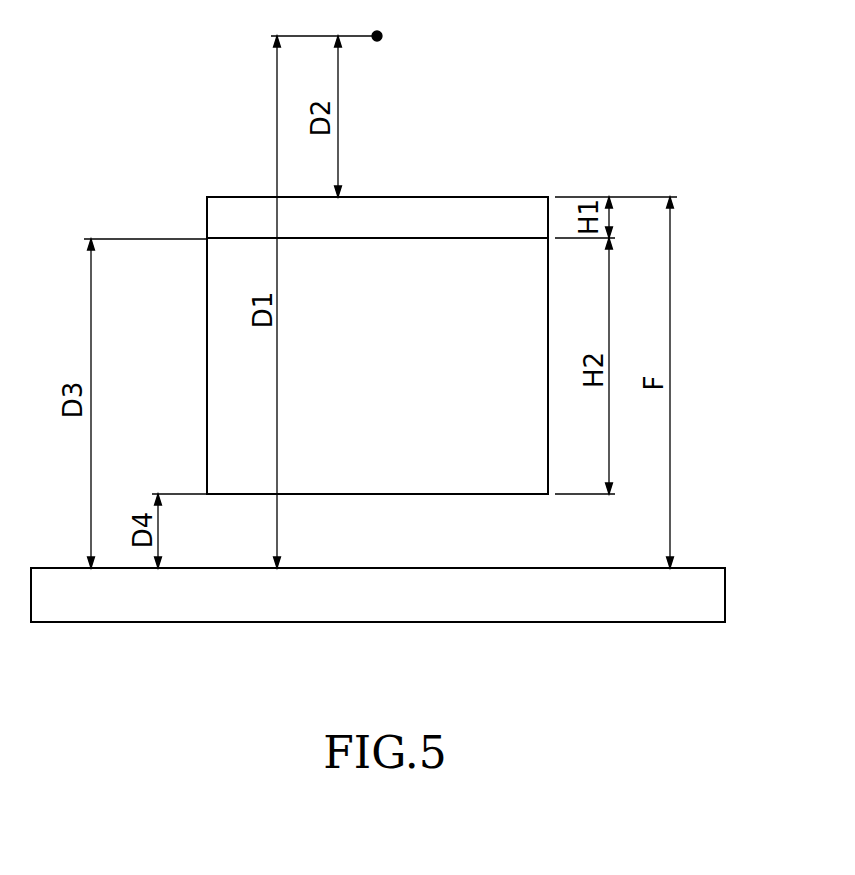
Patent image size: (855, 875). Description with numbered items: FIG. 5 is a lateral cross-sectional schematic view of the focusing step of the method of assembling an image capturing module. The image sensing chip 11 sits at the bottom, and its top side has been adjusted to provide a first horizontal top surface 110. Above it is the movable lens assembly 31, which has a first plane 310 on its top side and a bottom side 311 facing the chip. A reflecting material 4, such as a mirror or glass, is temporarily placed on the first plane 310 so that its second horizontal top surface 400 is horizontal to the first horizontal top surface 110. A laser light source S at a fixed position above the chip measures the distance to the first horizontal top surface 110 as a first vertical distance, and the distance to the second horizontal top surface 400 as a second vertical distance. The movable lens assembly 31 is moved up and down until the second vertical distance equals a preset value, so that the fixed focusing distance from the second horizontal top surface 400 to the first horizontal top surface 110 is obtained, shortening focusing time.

The image sensing chip 11 is at (577, 597).
The first horizontal top surface 110 is at (700, 568).
The movable lens assembly 31 is at (495, 478).
The bottom side 311 is at (313, 494).
The first plane 310 is at (235, 238).
The second horizontal top surface 400 is at (441, 197).
The reflecting material 4 is at (496, 197).
The laser light source S is at (385, 32).